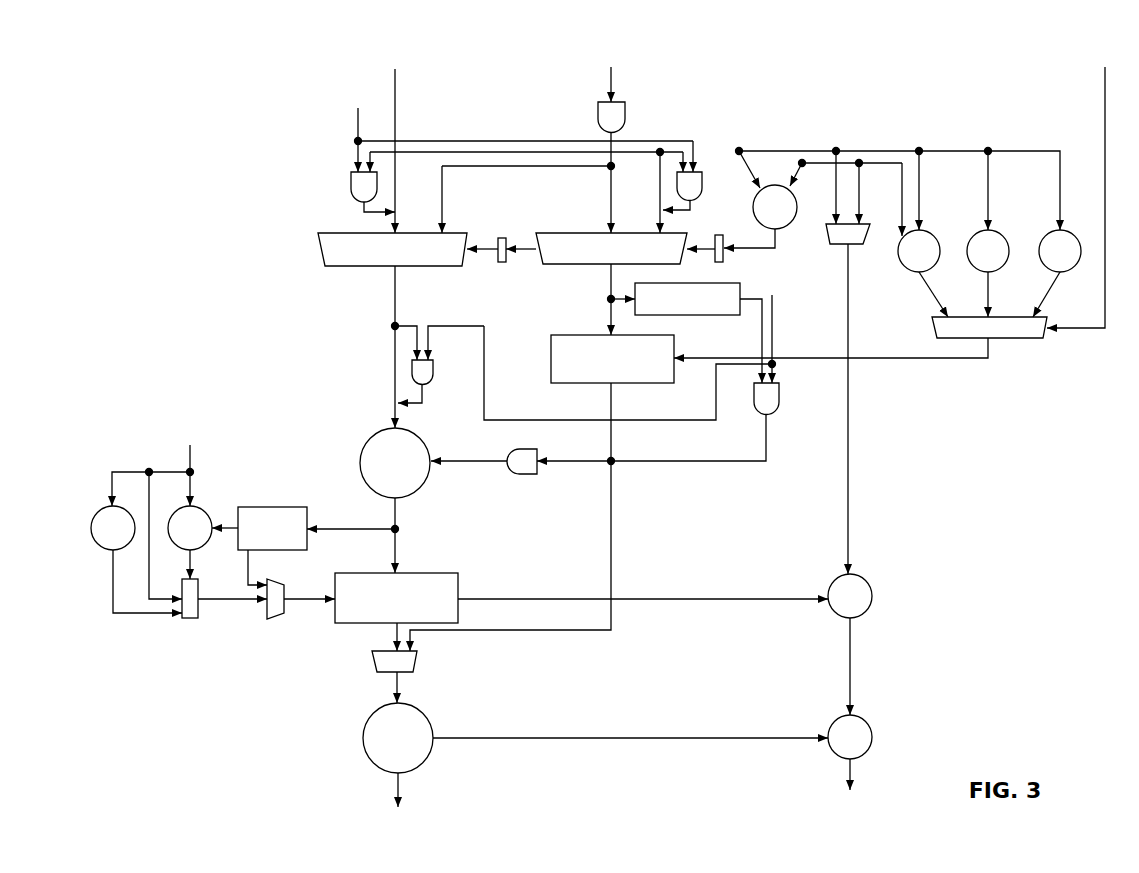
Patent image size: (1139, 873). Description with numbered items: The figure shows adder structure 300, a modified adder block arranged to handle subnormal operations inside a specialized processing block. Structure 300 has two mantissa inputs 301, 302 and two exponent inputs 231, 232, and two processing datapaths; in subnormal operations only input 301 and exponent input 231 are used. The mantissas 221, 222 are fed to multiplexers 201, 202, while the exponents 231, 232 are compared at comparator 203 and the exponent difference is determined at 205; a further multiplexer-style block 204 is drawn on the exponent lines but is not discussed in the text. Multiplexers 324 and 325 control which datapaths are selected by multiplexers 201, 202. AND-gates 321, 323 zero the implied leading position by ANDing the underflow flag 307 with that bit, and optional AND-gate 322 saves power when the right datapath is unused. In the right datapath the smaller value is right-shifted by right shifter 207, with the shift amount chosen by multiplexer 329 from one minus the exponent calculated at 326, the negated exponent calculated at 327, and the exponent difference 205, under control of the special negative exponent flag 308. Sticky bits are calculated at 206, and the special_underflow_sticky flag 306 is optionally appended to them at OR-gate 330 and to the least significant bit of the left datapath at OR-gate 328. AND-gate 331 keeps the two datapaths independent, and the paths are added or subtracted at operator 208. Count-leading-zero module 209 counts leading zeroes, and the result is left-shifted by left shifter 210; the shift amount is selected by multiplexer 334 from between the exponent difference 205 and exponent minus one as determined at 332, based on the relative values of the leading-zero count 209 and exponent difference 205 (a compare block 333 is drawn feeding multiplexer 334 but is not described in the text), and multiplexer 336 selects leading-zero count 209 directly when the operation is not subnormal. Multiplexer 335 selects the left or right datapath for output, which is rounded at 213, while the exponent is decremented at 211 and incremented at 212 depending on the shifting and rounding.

The adder structure 300 is at (168, 74).
The first mantissa input 301 is at (398, 60).
The second mantissa input 302 is at (612, 58).
The underflow flag 307 is at (357, 112).
The special negative exponent flag 308 is at (1104, 106).
The first mantissa 221 is at (397, 90).
The second mantissa 222 is at (613, 86).
The first exponent 231 is at (740, 150).
The second exponent 232 is at (804, 160).
The AND-gate 321 is at (350, 184).
The AND-gate 322 is at (598, 114).
The AND-gate 323 is at (704, 184).
The multiplexer 324 is at (502, 263).
The multiplexer 325 is at (721, 234).
The one-minus-exponent calculator 326 is at (985, 228).
The negative exponent calculator 327 is at (1057, 228).
The first multiplexer 201 is at (360, 232).
The second multiplexer 202 is at (590, 232).
The exponent comparator 203 is at (785, 226).
The exponent multiplexer 204 is at (836, 245).
The exponent difference unit 205 is at (907, 270).
The sticky bit calculator 206 is at (688, 316).
The right shifter 207 is at (594, 333).
The add/subtract operator 208 is at (362, 462).
The count-leading-zero module 209 is at (270, 506).
The left shifter 210 is at (416, 573).
The exponent decrementer 211 is at (872, 596).
The exponent incrementer 212 is at (872, 737).
The rounding unit 213 is at (432, 730).
The special_underflow_sticky flag 306 is at (774, 336).
The OR-gate 328 is at (430, 386).
The right-shift multiplexer 329 is at (1008, 340).
The OR-gate 330 is at (780, 400).
The AND-gate 331 is at (527, 475).
The exponent-minus-one calculator 332 is at (100, 508).
The comparator 333 is at (207, 508).
The left-shift multiplexer 334 is at (196, 619).
The output datapath multiplexer 335 is at (418, 662).
The shift-select multiplexer 336 is at (278, 619).